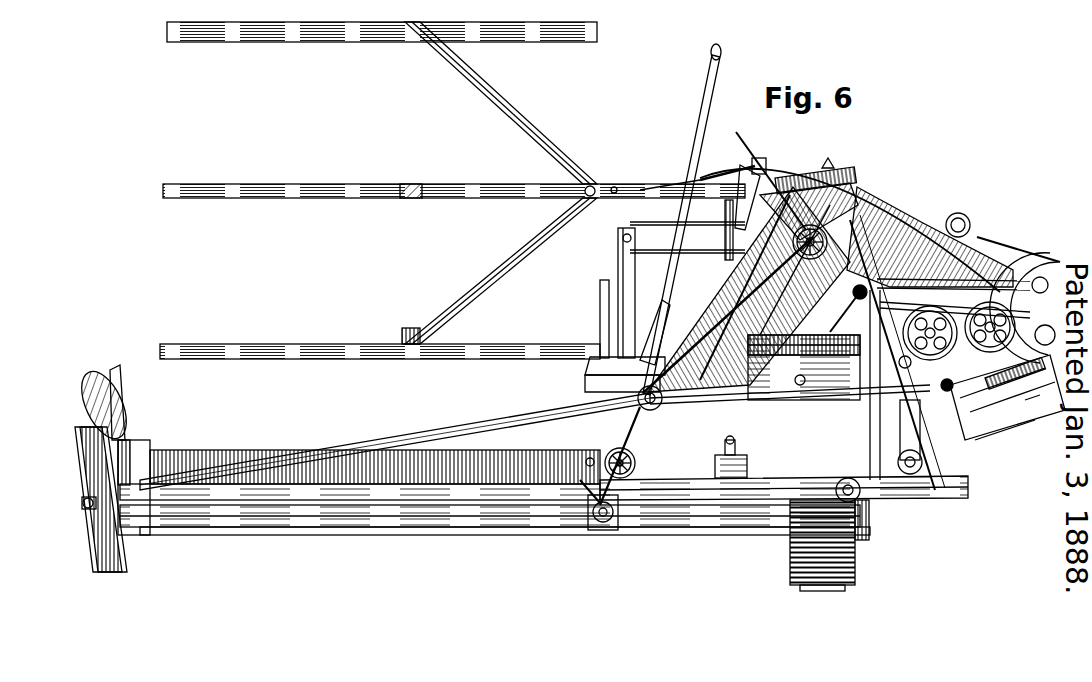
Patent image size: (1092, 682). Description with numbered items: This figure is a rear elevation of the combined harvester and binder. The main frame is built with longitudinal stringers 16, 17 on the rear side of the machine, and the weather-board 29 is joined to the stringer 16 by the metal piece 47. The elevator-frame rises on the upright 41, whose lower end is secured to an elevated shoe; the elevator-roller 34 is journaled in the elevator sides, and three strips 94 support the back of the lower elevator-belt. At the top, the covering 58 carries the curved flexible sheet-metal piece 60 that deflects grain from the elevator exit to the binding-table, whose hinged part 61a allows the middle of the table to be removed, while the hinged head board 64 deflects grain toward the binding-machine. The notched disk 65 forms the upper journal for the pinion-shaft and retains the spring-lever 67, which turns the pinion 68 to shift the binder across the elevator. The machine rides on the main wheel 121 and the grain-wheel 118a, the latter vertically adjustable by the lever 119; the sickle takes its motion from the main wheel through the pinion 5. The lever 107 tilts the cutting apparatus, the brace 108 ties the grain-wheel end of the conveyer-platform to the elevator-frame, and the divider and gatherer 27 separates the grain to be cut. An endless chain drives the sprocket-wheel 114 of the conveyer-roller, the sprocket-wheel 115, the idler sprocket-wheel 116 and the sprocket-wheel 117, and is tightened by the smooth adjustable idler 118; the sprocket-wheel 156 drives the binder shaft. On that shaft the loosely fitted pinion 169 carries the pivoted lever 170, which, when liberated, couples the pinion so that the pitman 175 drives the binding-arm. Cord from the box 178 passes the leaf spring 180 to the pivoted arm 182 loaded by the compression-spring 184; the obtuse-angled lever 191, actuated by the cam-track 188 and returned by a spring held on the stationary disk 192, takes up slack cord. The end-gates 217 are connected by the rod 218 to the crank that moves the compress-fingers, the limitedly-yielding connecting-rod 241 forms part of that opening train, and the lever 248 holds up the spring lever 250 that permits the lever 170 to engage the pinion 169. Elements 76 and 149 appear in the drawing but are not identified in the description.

The pinion 5 is at (810, 264).
The longitudinal stringer 16 is at (784, 488).
The longitudinal stringer 17 is at (494, 487).
The divider and gatherer 27 is at (104, 425).
The weather-board 29 is at (375, 467).
The elevator-roller 34 is at (746, 290).
The upright 41 is at (672, 279).
The metal piece 47 is at (608, 458).
The top covering 58 is at (815, 170).
The curved piece of flexible sheet metal 60 is at (880, 243).
The hinged part of binding-table 61a is at (872, 205).
The head board 64 is at (730, 197).
The notched disk 65 is at (469, 190).
The spring-lever 67 is at (703, 173).
The pinion 68 is at (852, 270).
The bracket 76 is at (631, 346).
The strips 94 is at (799, 380).
The lever 107 is at (692, 214).
The brace 108 is at (395, 441).
The sprocket-wheel 114 is at (597, 505).
The sprocket-wheel 115 is at (640, 410).
The idler sprocket-wheel 116 is at (622, 352).
The sprocket-wheel 117 is at (762, 170).
The adjustable idler 118 is at (880, 532).
The grain-wheel 118a is at (79, 515).
The lever 119 is at (108, 390).
The main wheel 121 is at (868, 540).
The box 149 is at (733, 453).
The sprocket-wheel 156 is at (920, 475).
The pinion 169 is at (923, 333).
The lever 170 is at (952, 327).
The pitman 175 is at (997, 330).
The cord box 178 is at (762, 400).
The leaf spring 180 is at (878, 268).
The pivoted arm 182 is at (905, 302).
The compression-spring 184 is at (940, 255).
The cam-track 188 is at (1040, 300).
The obtuse-angled lever 191 is at (945, 310).
The stationary disk 192 is at (965, 325).
The grain-retaining end-gates 217 is at (1043, 403).
The rod 218 is at (988, 410).
The limitedly-yielding connecting-rod 241 is at (1007, 397).
The lever 248 is at (975, 435).
The spring lever 250 is at (912, 369).